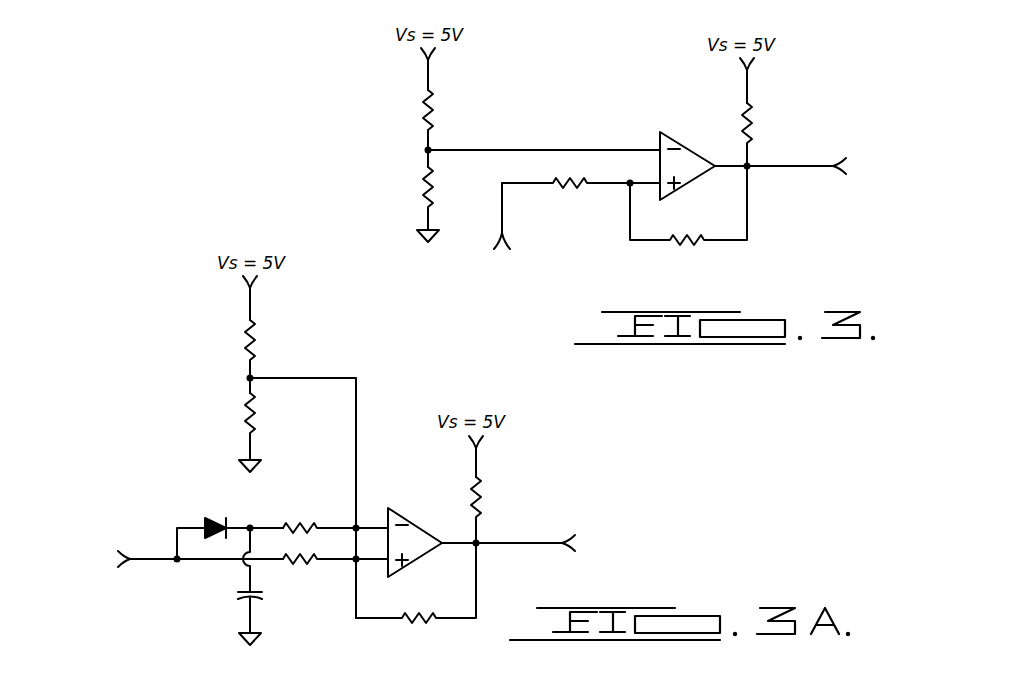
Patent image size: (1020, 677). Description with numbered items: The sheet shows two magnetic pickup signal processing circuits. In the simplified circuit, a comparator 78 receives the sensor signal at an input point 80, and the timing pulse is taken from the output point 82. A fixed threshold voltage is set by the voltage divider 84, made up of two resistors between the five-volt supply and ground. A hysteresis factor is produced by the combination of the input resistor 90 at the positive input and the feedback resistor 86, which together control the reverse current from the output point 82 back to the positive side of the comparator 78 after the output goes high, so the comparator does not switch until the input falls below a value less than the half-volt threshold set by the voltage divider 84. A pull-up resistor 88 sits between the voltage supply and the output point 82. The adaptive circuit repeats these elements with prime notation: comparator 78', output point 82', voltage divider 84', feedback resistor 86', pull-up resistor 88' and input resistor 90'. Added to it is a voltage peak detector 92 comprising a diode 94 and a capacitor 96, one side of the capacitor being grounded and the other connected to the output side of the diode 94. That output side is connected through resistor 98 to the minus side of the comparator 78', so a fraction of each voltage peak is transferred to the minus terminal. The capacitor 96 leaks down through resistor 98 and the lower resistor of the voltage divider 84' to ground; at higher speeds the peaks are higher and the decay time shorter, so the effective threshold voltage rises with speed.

In FIG. 3, the comparator 78 is at (666, 150).
In FIG. 3, the input point 80 is at (506, 238).
In FIG. 3, the output point 82 is at (780, 191).
In FIG. 3, the voltage divider 84 is at (400, 145).
In FIG. 3, the resistor R5 86 is at (689, 223).
In FIG. 3, the pull-up resistor 88 is at (737, 112).
In FIG. 3, the resistor R3 90 is at (581, 168).
In FIG. 3A, the comparator 78' is at (415, 526).
In FIG. 3A, the output point 82' is at (511, 564).
In FIG. 3A, the voltage divider 84' is at (231, 374).
In FIG. 3A, the resistor R5 86' is at (416, 602).
In FIG. 3A, the pull-up resistor 88' is at (506, 489).
In FIG. 3A, the resistor R3 90' is at (335, 592).
In FIG. 3A, the voltage peak detector 92 is at (174, 542).
In FIG. 3A, the diode 94 is at (210, 518).
In FIG. 3A, the capacitor 96 is at (240, 601).
In FIG. 3A, the resistor 98 is at (293, 523).